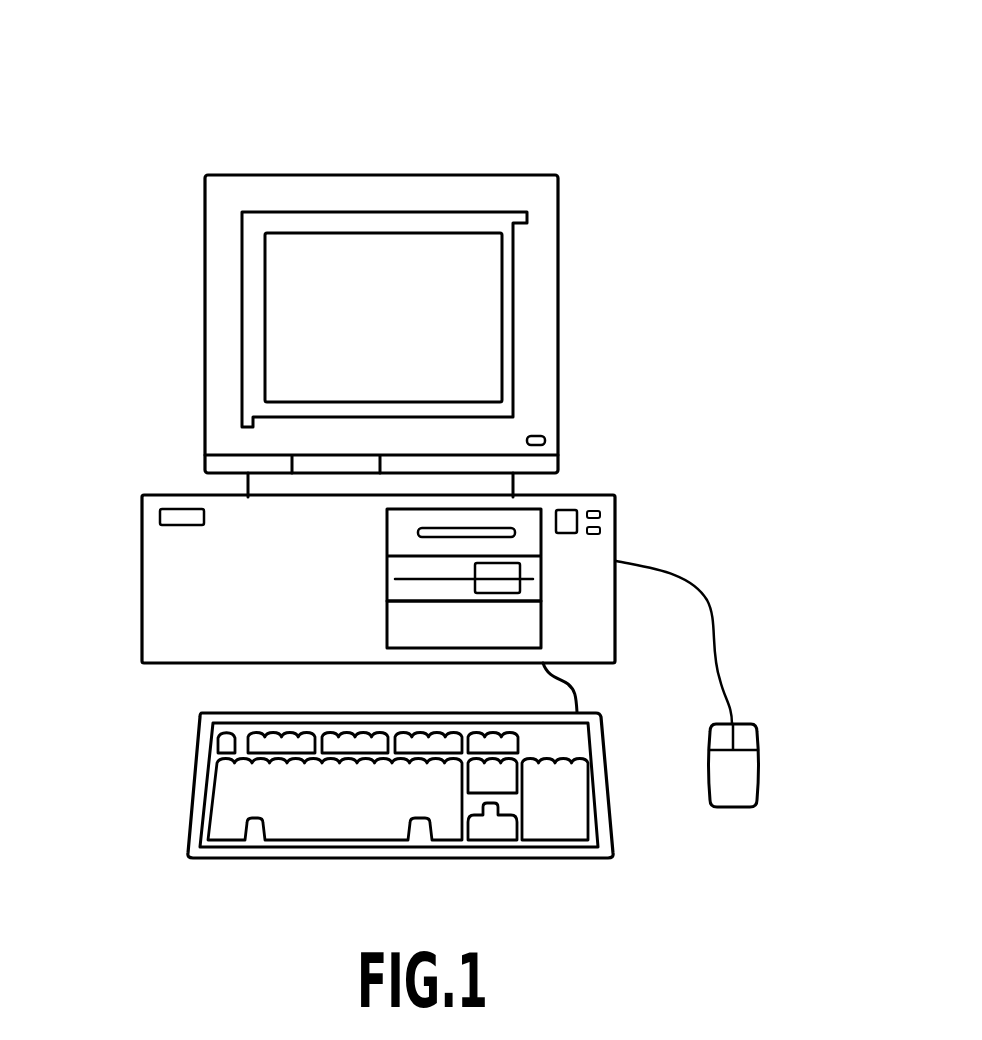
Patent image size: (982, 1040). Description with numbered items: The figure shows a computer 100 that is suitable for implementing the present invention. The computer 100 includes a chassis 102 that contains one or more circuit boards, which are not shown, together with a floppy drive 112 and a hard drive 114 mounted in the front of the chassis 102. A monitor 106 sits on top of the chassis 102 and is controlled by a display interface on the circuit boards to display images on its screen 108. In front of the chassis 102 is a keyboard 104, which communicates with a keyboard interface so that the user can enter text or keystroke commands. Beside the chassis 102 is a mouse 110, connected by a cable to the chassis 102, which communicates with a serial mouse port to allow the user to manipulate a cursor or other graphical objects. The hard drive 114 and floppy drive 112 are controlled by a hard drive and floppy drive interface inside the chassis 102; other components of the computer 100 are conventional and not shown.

The computer 100 is at (565, 46).
The chassis 102 is at (142, 595).
The keyboard 104 is at (207, 763).
The monitor 106 is at (207, 175).
The screen 108 is at (298, 292).
The mouse 110 is at (745, 767).
The floppy drive 112 is at (508, 520).
The hard drive 114 is at (488, 628).